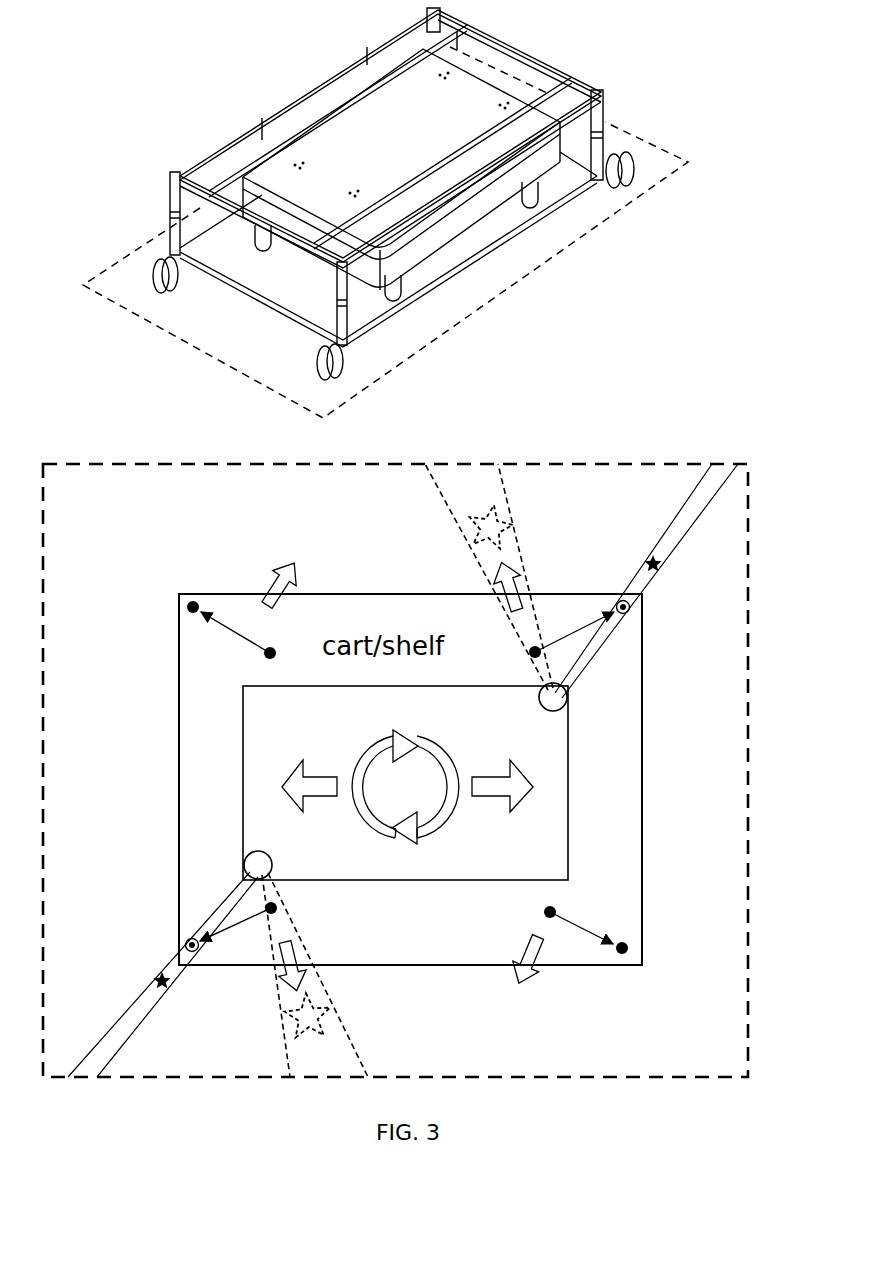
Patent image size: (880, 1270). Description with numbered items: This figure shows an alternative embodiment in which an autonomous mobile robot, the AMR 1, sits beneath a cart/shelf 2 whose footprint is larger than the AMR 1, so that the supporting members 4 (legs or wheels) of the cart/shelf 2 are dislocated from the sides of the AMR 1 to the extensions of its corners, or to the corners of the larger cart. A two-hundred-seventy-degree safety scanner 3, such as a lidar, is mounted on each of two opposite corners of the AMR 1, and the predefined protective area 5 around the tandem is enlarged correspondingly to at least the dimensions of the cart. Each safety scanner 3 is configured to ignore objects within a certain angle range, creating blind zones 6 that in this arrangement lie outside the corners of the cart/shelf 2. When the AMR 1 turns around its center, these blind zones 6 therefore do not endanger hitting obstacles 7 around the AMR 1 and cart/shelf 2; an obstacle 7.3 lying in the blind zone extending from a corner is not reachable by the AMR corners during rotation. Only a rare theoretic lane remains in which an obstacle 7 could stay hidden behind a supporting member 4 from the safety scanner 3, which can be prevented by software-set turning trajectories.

The autonomous mobile robot (AMR) 1 is at (368, 140).
The cart/shelf 2 is at (383, 327).
The safety scanner 3 is at (568, 695).
The supporting members 4 is at (605, 123).
The protective area 5 is at (257, 357).
The blind zones 6 is at (698, 507).
The obstacles 7 is at (508, 520).
The obstacle in the blind zone extending from the corner of the AMR 7.3 is at (650, 563).